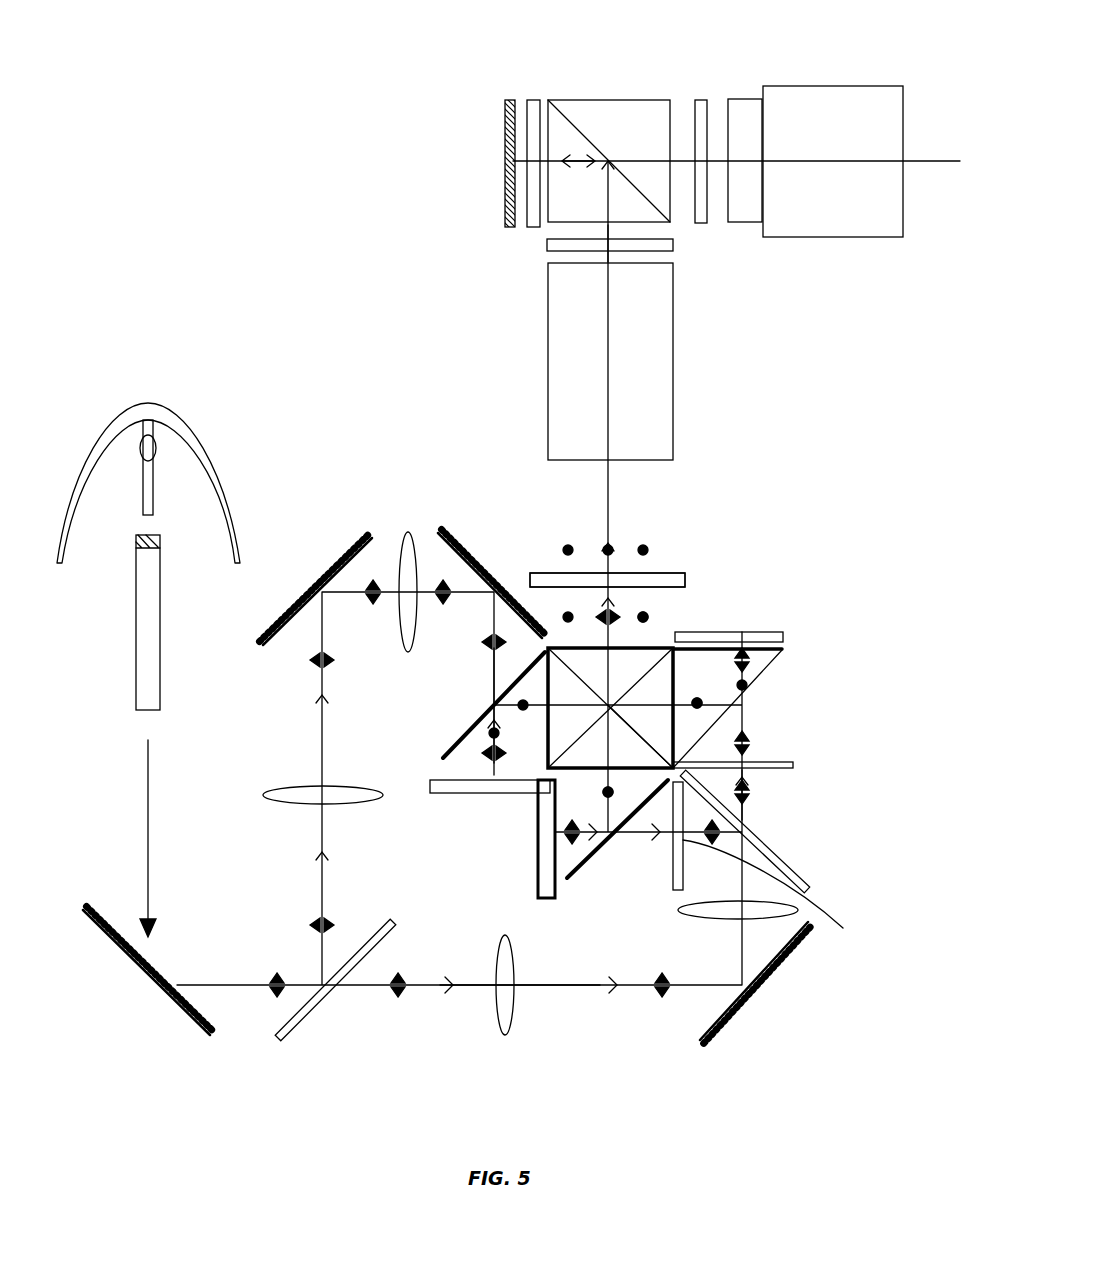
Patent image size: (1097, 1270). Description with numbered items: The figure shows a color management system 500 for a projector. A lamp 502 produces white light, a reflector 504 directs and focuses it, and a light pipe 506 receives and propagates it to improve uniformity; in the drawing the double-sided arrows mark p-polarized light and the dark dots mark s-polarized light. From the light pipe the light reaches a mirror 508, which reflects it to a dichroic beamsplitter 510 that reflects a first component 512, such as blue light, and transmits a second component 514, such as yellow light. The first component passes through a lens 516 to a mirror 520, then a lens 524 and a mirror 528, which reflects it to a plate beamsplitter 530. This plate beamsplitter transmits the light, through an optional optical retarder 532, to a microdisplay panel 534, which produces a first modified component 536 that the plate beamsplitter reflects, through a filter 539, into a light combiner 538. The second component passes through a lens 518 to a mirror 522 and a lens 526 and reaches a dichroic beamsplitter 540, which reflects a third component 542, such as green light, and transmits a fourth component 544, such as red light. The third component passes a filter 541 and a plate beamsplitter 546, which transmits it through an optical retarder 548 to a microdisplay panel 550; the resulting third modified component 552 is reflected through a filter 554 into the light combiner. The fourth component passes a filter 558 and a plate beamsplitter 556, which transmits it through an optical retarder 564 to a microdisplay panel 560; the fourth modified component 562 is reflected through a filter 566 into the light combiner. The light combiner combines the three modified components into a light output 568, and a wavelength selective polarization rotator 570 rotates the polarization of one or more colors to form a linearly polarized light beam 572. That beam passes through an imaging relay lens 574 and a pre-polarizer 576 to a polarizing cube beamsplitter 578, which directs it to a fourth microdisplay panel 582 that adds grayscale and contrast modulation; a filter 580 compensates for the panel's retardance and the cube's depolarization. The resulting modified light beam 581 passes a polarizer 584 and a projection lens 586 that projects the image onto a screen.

The color management system 500 is at (170, 170).
The lamp 502 is at (140, 455).
The reflector 504 is at (133, 410).
The light pipe 506 is at (138, 600).
The mirror 508 is at (140, 985).
The dichroic beamsplitter 510 is at (322, 1005).
The first component 512 is at (270, 728).
The second component 514 is at (443, 995).
The lens 516 is at (360, 803).
The lens 518 is at (515, 1010).
The mirror 520 is at (328, 575).
The mirror 522 is at (788, 948).
The lens 524 is at (408, 532).
The lens 526 is at (705, 917).
The mirror 528 is at (478, 565).
The plate beamsplitter 530 is at (465, 720).
The optical retarder 532 is at (465, 773).
The microdisplay panel 534 is at (440, 795).
The first modified component 536 is at (555, 680).
The light combiner 538 is at (610, 708).
The filter 539 is at (545, 640).
The dichroic beamsplitter 540 is at (785, 862).
The filter 541 is at (784, 894).
The third component 542 is at (670, 845).
The fourth component 544 is at (748, 792).
The plate beamsplitter 546 is at (570, 880).
The optical retarder 548 is at (540, 855).
The microdisplay panel 550 is at (535, 825).
The third modified component 552 is at (603, 795).
The filter 554 is at (640, 765).
The plate beamsplitter 556 is at (760, 680).
The filter 558 is at (770, 762).
The microdisplay panel 560 is at (738, 631).
The fourth modified component 562 is at (697, 703).
The optical retarder 564 is at (780, 668).
The filter 566 is at (668, 648).
The light output 568 is at (613, 600).
The wavelength selective polarization rotator 570 is at (700, 577).
The linearly polarized light beam 572 is at (612, 240).
The imaging relay lens 574 is at (662, 384).
The pre-polarizer 576 is at (675, 258).
The polarizing cube beamsplitter 578 is at (605, 118).
The filter 580 is at (520, 92).
The modified light beam 581 is at (520, 170).
The microdisplay panel 582 is at (512, 167).
The polarizer 584 is at (698, 95).
The projection lens 586 is at (850, 143).